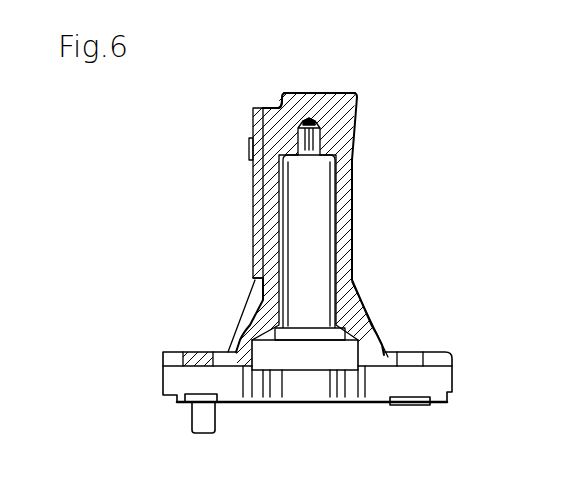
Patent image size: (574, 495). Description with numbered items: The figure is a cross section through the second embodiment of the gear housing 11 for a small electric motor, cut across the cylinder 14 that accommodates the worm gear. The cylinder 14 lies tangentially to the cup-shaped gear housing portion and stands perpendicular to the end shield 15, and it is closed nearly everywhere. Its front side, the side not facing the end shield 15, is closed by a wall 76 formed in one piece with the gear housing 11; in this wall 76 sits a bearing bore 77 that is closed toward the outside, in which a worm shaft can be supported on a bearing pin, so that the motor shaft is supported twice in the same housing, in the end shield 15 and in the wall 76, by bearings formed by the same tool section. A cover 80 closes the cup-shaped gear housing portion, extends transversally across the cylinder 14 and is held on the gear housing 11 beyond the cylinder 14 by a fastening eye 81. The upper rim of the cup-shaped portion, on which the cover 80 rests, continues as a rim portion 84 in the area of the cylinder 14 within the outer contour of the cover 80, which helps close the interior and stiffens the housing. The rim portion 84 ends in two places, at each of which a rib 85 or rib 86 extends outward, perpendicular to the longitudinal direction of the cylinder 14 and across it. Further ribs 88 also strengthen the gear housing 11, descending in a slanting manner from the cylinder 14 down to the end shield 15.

The gear housing 11 is at (366, 107).
The cylinder 14 is at (340, 237).
The end shield 15 is at (385, 357).
The wall 76 is at (305, 107).
The bearing bore 77 is at (320, 138).
The cover 80 is at (256, 218).
The fastening eye 81 is at (251, 143).
The rim portion 84 is at (265, 195).
The rib 85 is at (262, 279).
The rib 86 is at (267, 108).
The ribs 88 is at (352, 305).